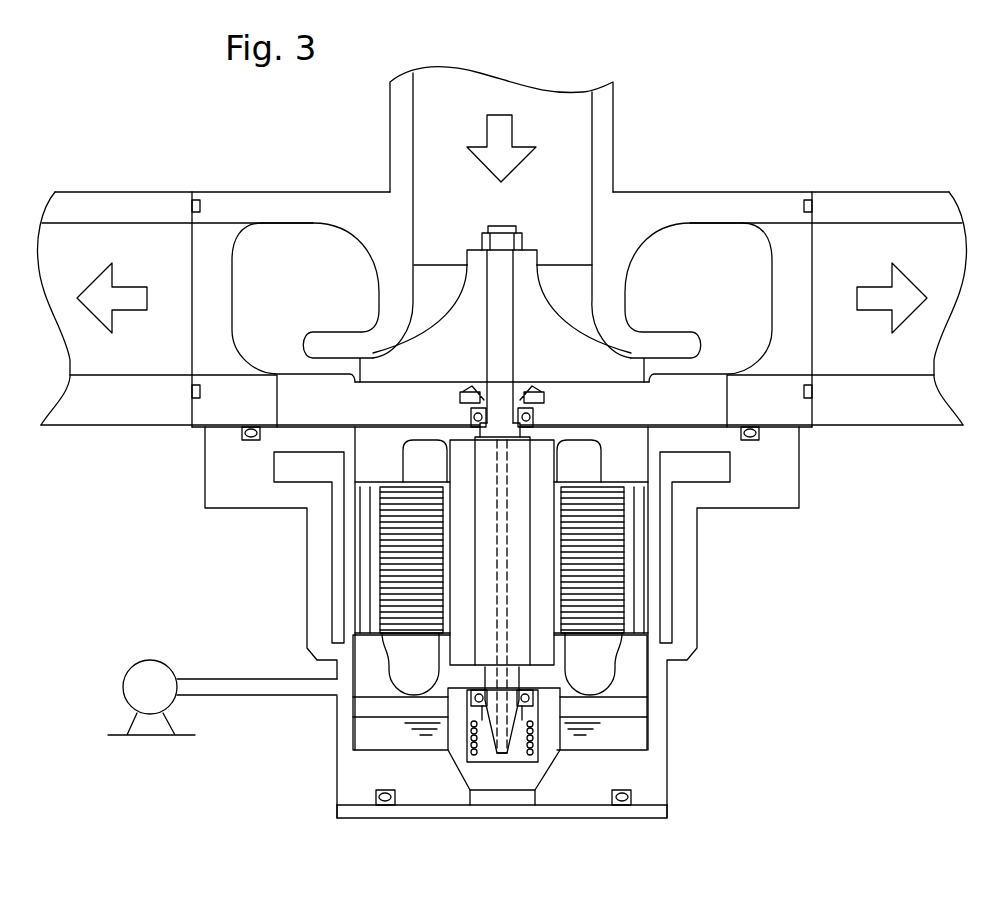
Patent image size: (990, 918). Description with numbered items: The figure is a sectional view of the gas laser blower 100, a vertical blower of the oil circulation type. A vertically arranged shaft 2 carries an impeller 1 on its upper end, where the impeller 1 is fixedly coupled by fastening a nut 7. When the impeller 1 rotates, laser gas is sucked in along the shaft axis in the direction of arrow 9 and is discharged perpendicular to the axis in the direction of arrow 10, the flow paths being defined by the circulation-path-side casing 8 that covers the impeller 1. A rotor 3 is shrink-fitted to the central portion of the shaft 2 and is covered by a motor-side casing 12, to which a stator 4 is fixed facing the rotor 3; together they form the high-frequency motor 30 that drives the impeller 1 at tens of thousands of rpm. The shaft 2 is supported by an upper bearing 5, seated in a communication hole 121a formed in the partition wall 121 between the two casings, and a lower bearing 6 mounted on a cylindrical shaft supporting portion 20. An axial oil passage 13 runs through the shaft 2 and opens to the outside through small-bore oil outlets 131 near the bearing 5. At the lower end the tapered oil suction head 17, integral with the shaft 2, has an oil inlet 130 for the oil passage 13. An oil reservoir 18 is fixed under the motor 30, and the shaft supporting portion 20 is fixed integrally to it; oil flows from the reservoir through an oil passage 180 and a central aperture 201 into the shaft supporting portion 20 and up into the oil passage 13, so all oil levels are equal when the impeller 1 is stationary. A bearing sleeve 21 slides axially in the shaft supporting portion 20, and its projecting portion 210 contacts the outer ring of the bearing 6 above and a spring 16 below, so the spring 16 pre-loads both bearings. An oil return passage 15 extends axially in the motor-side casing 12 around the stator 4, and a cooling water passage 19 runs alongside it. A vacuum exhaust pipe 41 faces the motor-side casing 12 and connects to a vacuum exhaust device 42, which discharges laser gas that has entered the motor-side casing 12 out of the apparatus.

The impeller 1 is at (567, 280).
The shaft 2 is at (450, 510).
The rotor 3 is at (557, 552).
The stator 4 is at (623, 547).
The bearing 5 is at (470, 400).
The bearing 6 is at (447, 697).
The nut 7 is at (520, 235).
The circulation-path-side casing 8 is at (350, 192).
The arrow 9 is at (515, 130).
The arrow 10 is at (147, 287).
The motor-side casing 12 is at (800, 517).
The oil passage 13 is at (427, 640).
The oil return passage 15 is at (643, 530).
The spring 16 is at (465, 745).
The oil suction head 17 is at (540, 763).
The oil reservoir 18 is at (650, 735).
The cooling water passage 19 is at (335, 570).
The shaft supporting portion 20 is at (443, 733).
The bearing sleeve 21 is at (537, 710).
The high-frequency motor 30 is at (615, 647).
The vacuum exhaust pipe 41 is at (210, 678).
The vacuum exhaust device 42 is at (137, 668).
The gas laser blower 100 is at (756, 166).
The partition wall 121 is at (323, 403).
The communication hole 121a is at (568, 380).
The oil inlet 130 is at (500, 760).
The oil outlets 131 is at (480, 430).
The oil passage 180 is at (455, 760).
The aperture 201 is at (504, 757).
The projecting portion 210 is at (560, 765).